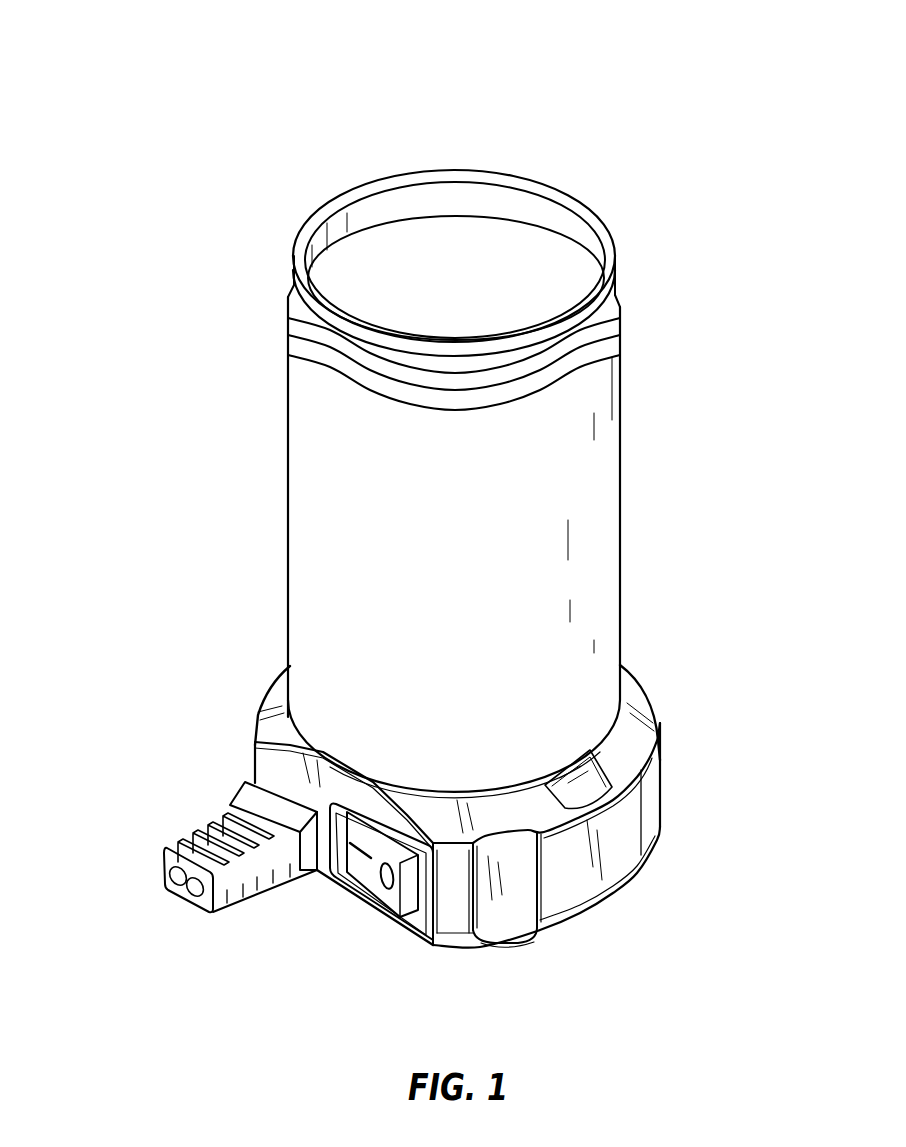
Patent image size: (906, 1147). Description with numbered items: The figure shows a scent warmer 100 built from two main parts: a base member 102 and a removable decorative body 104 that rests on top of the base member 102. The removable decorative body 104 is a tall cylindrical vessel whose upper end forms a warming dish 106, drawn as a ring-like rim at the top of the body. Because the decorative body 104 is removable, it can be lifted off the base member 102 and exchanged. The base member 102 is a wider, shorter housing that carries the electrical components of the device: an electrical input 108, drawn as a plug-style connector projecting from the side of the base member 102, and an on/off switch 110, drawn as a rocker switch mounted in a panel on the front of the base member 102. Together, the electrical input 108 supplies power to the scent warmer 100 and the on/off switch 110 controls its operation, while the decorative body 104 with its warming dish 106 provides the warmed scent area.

The scent warmer 100 is at (688, 98).
The base member 102 is at (268, 735).
The removable decorative body 104 is at (318, 489).
The warming dish 106 is at (456, 175).
The electrical input 108 is at (160, 891).
The on/off switch 110 is at (352, 905).